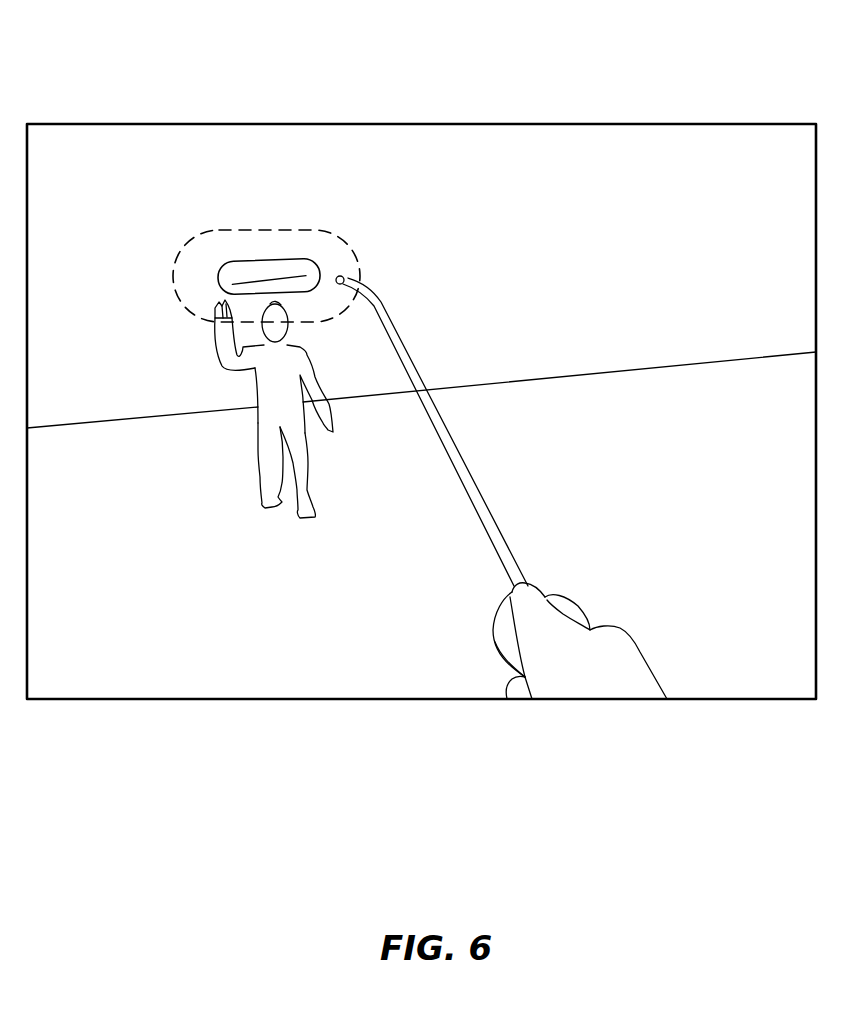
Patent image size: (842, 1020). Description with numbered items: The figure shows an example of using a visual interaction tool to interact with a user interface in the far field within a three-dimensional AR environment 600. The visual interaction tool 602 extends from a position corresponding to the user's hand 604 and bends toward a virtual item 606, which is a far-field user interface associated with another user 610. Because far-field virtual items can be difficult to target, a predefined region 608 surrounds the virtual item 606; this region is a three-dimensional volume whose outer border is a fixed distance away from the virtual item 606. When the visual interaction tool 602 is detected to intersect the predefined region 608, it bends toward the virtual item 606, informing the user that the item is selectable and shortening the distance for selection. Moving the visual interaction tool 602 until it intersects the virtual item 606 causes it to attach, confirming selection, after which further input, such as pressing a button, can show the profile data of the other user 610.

The three-dimensional AR environment 600 is at (98, 675).
The visual interaction tool 602 is at (488, 507).
The user's hand 604 is at (625, 657).
The virtual item 606 is at (317, 275).
The predefined region 608 is at (278, 230).
The other user 610 is at (282, 376).